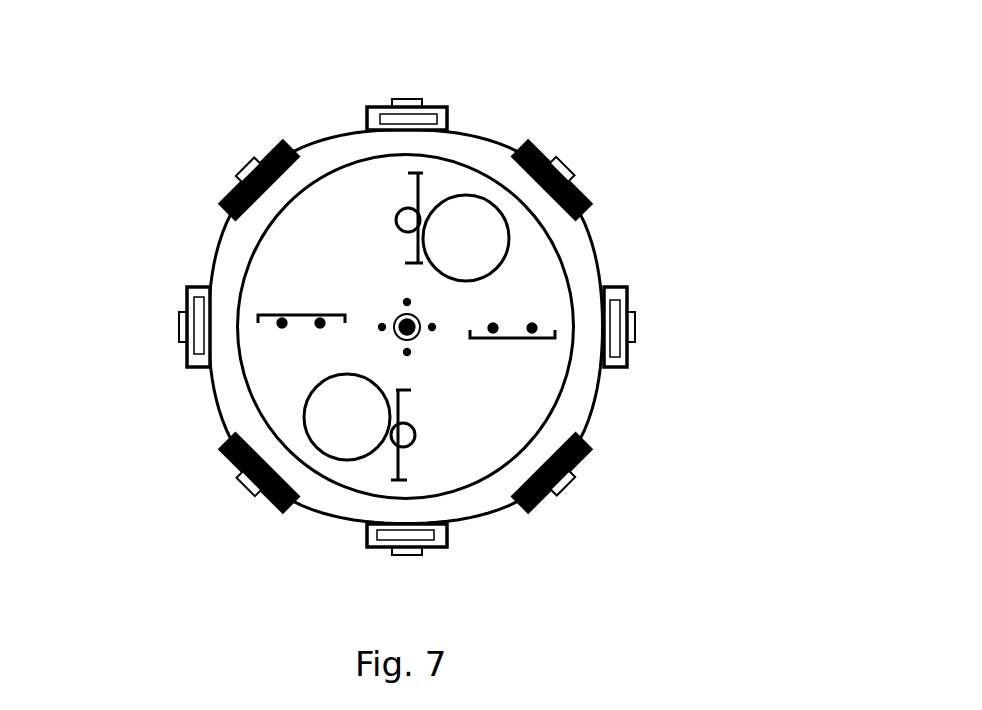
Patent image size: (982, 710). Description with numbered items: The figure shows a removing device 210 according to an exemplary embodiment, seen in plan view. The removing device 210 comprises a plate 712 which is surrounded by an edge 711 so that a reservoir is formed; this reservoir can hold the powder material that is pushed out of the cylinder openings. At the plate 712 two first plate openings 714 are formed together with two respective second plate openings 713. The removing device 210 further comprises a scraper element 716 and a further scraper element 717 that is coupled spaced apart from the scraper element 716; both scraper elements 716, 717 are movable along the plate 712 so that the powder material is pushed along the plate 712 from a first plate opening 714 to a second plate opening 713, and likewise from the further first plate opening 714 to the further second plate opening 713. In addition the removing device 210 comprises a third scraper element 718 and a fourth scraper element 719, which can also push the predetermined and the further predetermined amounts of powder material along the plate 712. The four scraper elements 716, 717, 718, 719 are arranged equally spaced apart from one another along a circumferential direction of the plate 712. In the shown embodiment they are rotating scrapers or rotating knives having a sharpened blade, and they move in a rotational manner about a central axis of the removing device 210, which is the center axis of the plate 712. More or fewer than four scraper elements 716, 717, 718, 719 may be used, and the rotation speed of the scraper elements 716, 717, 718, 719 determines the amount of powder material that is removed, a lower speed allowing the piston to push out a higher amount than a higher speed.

The removing device 210 is at (673, 182).
The edge 711 is at (585, 262).
The plate 712 is at (540, 384).
The second plate openings 713 is at (474, 217).
The first plate openings 714 is at (398, 215).
The scraper element 716 is at (606, 379).
The further scraper element 717 is at (393, 478).
The third scraper element 718 is at (267, 313).
The fourth scraper element 719 is at (419, 178).